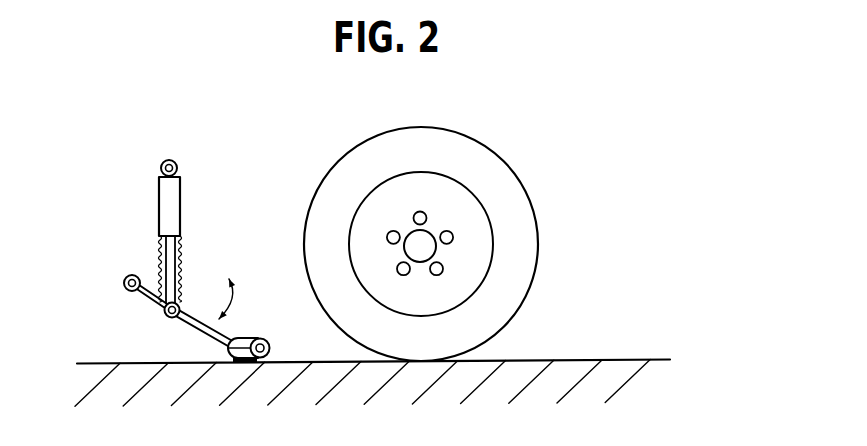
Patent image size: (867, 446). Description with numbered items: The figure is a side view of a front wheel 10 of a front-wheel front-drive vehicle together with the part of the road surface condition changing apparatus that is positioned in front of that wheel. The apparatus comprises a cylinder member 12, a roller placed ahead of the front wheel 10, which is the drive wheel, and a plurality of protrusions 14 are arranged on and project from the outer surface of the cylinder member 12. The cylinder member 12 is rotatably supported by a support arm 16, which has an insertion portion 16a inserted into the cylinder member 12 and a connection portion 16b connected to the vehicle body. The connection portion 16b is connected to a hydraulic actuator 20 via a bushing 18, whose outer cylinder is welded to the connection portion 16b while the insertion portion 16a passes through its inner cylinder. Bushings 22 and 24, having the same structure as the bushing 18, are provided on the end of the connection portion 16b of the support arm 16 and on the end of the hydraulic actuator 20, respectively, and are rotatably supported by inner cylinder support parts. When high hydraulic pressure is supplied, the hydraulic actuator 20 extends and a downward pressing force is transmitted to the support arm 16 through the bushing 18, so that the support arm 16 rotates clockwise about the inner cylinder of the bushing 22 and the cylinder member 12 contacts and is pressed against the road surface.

The front wheel 10 is at (526, 187).
The cylinder member 12 is at (268, 337).
The protrusions 14 is at (243, 292).
The support arm 16 is at (190, 326).
The insertion portion 16a is at (270, 348).
The connection portion 16b is at (196, 316).
The bushing 18 is at (158, 320).
The hydraulic actuator 20 is at (171, 205).
The bushing 22 is at (129, 276).
The bushing 24 is at (177, 168).